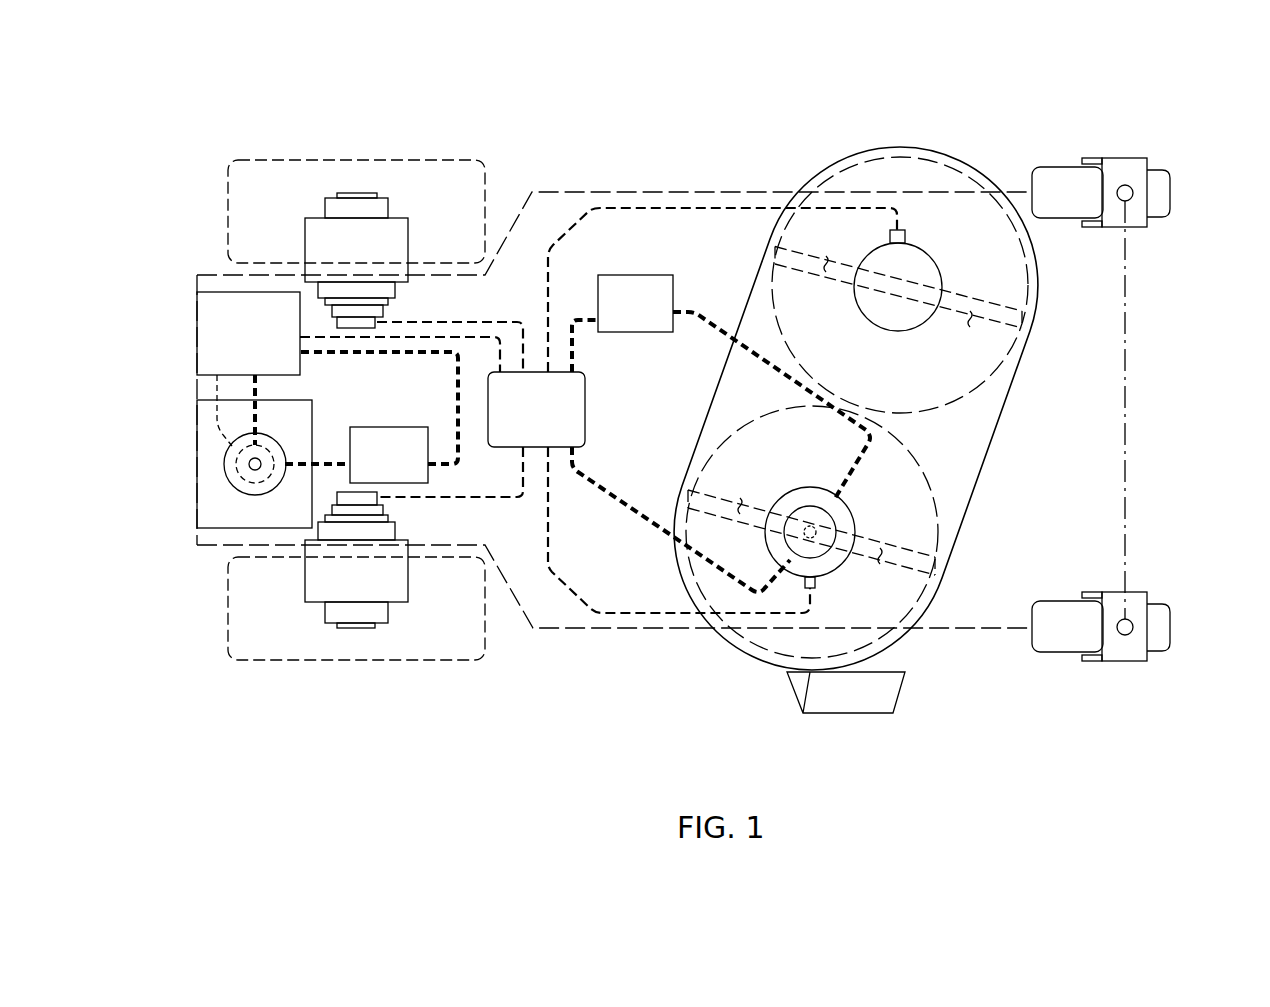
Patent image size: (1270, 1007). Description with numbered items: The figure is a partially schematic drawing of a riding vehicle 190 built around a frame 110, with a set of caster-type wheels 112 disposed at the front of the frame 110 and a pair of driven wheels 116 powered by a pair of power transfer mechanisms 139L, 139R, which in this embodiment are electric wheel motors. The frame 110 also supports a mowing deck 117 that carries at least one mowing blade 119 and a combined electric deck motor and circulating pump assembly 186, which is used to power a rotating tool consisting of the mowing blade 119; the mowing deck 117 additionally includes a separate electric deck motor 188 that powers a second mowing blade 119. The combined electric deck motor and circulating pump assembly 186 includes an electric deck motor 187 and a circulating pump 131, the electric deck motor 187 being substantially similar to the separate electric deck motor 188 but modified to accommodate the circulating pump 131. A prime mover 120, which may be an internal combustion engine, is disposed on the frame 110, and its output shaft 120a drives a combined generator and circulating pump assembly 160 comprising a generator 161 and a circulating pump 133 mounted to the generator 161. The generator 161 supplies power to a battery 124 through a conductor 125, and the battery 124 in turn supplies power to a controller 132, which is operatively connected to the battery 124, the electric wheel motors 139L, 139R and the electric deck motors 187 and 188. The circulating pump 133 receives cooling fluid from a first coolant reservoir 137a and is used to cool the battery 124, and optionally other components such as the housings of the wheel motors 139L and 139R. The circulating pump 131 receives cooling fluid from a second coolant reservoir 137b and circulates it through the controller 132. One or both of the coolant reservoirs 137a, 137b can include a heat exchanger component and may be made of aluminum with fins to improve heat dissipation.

The riding vehicle 190 is at (172, 98).
The frame 110 is at (658, 192).
The driven wheels 116 is at (358, 160).
The power transfer mechanism 139L is at (284, 241).
The power transfer mechanism 139R is at (283, 582).
The battery 124 is at (268, 348).
The conductor 125 is at (214, 392).
The prime mover 120 is at (243, 525).
The combined generator and circulating pump assembly 160 is at (213, 451).
The output shaft 120a is at (250, 466).
The circulating pump 133 is at (268, 451).
The generator 161 is at (255, 496).
The first coolant reservoir 137a is at (365, 478).
The second coolant reservoir 137b is at (611, 325).
The controller 132 is at (518, 437).
The mowing deck 117 is at (898, 148).
The mowing blade 119 is at (973, 323).
The separate electric deck motor 188 is at (880, 330).
The electric deck motor 187 is at (795, 488).
The combined electric deck motor and circulating pump assembly 186 is at (810, 474).
The circulating pump 131 is at (828, 548).
The caster-type wheels 112 is at (1170, 190).